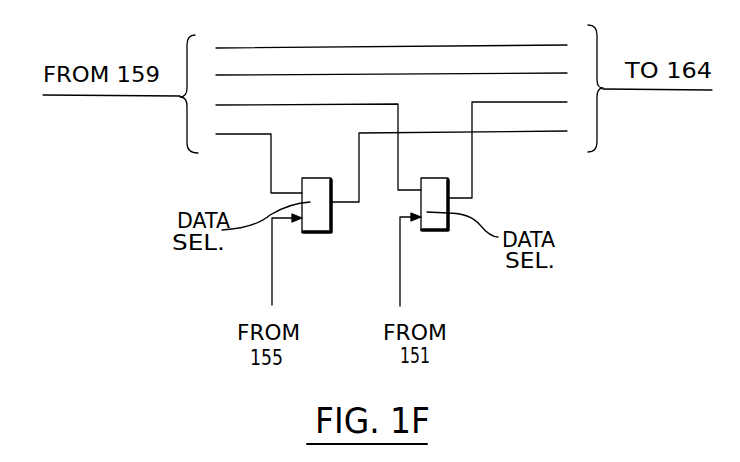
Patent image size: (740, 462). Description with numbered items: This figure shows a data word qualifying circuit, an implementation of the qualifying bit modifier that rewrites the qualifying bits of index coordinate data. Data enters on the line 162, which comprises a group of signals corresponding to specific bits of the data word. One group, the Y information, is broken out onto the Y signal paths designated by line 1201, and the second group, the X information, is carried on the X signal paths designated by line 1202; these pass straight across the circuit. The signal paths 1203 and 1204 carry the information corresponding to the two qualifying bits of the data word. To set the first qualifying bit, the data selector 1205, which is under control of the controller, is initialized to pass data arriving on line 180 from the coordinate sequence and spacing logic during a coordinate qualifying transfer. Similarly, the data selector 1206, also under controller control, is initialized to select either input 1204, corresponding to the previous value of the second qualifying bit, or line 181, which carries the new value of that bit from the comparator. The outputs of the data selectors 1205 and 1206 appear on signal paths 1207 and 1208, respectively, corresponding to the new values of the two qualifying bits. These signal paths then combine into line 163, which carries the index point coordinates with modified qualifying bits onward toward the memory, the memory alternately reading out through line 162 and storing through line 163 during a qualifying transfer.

The line 162 is at (120, 96).
The line 163 is at (630, 91).
The Y signal paths 1201 is at (295, 47).
The X signal paths 1202 is at (360, 74).
The signal path 1203 is at (279, 103).
The signal path 1204 is at (260, 133).
The data selector 1205 is at (440, 231).
The data selector 1206 is at (317, 232).
The signal path 1207 is at (492, 103).
The signal path 1208 is at (502, 132).
The line 180 is at (401, 286).
The line 181 is at (272, 262).